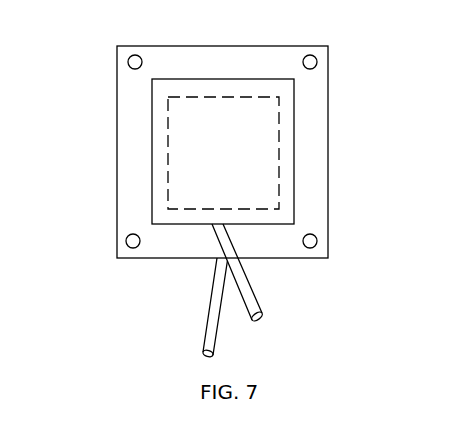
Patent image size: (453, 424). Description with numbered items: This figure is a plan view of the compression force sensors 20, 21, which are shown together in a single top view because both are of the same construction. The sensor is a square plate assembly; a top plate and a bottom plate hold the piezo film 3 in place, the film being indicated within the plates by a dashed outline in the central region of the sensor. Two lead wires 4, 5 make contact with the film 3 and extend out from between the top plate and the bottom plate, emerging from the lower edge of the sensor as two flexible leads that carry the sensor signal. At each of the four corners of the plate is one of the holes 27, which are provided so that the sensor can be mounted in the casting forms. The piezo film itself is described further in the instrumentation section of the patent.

The compression force sensor 20 is at (117, 46).
The compression force sensor 21 is at (223, 151).
The holes 27 is at (310, 55).
The piezo film 3 is at (265, 162).
The lead wire 4 is at (255, 292).
The lead wire 5 is at (215, 343).